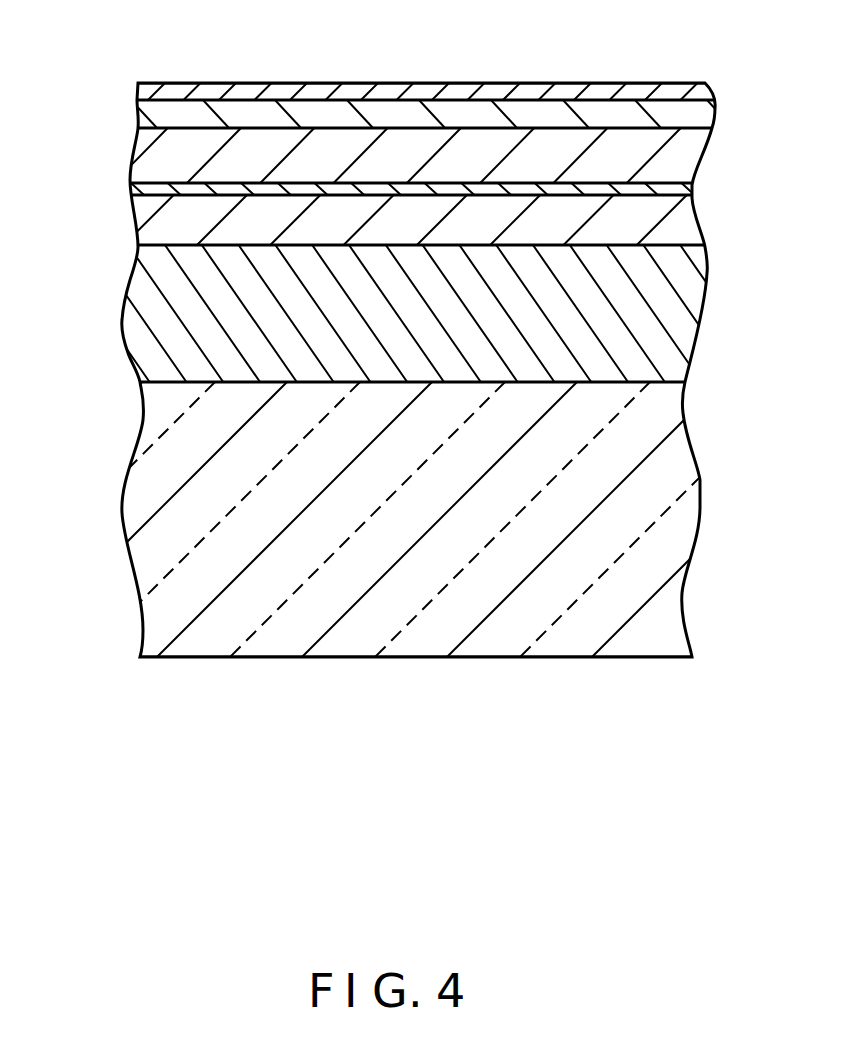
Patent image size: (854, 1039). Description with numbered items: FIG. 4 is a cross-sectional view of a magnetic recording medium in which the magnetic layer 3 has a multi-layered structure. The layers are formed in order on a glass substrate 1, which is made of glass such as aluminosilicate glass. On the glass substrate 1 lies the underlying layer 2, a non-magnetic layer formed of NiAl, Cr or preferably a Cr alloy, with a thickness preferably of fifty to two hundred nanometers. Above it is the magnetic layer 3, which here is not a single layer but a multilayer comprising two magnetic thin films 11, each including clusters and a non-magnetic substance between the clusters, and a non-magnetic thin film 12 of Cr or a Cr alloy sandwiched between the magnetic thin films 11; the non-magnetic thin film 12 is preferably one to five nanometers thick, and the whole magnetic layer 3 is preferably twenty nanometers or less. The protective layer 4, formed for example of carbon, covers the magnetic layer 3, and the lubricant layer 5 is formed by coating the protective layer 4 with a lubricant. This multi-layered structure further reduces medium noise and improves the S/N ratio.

The glass substrate 1 is at (678, 530).
The underlying layer 2 is at (692, 323).
The magnetic layer 3 is at (424, 182).
The protective layer 4 is at (703, 120).
The lubricant layer 5 is at (710, 89).
The magnetic thin film 11 is at (137, 142).
The non-magnetic thin film 12 is at (133, 188).